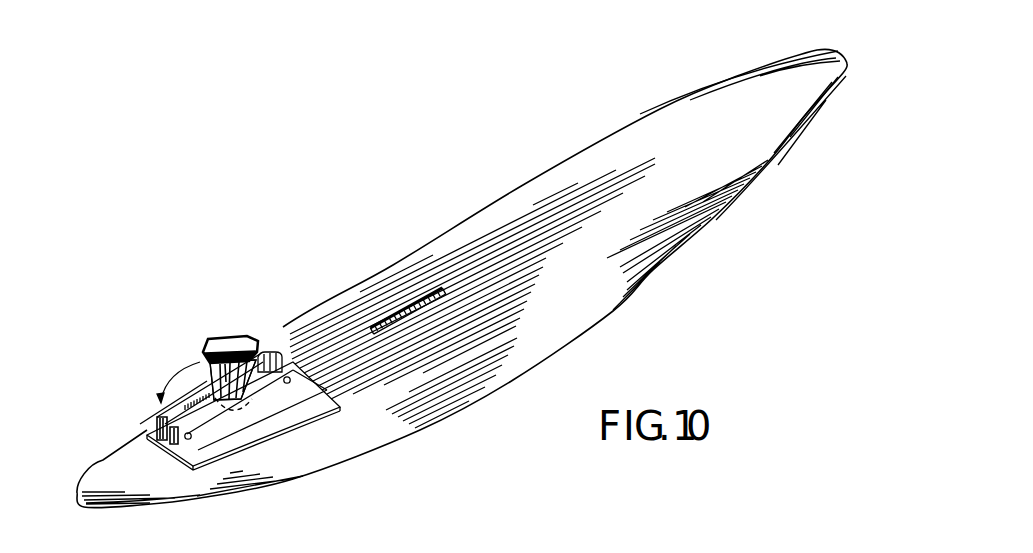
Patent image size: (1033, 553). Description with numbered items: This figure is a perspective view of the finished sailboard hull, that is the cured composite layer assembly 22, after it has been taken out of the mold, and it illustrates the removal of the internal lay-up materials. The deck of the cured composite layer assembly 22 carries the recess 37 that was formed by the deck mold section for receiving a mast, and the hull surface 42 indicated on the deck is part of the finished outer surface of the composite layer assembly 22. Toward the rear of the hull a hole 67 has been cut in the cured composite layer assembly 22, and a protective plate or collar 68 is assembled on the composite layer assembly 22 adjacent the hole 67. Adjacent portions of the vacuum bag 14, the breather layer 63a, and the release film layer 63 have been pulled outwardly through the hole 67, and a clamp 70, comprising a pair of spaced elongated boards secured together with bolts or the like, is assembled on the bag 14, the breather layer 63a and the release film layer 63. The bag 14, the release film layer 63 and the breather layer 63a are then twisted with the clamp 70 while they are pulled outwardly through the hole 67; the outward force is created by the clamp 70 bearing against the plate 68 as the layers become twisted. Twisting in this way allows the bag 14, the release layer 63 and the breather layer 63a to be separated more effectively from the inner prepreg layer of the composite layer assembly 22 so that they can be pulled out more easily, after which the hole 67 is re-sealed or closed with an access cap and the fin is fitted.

The cured composite layer assembly 22 is at (394, 265).
The deck surface 42 is at (573, 191).
The recess 37 is at (396, 309).
The vacuum bag 14 is at (204, 356).
The release film layer 63 is at (204, 348).
The breather layer 63a is at (216, 338).
The protective plate 68 is at (276, 410).
The clamp 70 is at (158, 418).
The hole 67 is at (252, 406).